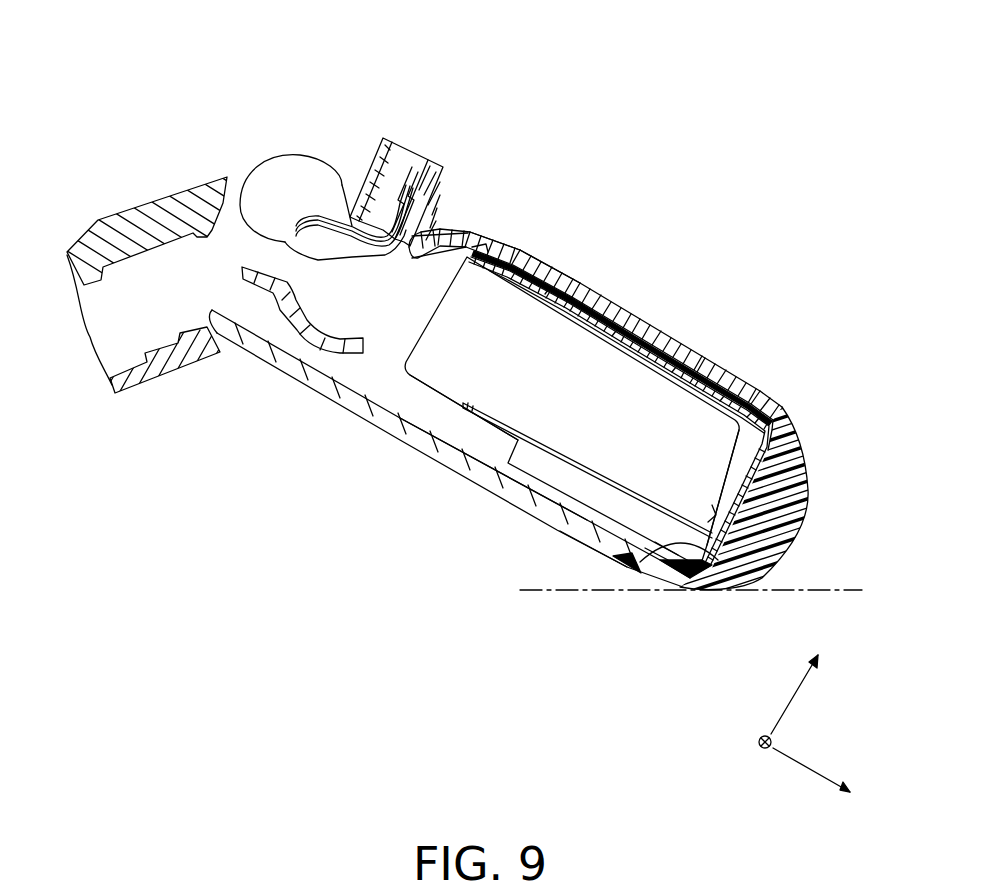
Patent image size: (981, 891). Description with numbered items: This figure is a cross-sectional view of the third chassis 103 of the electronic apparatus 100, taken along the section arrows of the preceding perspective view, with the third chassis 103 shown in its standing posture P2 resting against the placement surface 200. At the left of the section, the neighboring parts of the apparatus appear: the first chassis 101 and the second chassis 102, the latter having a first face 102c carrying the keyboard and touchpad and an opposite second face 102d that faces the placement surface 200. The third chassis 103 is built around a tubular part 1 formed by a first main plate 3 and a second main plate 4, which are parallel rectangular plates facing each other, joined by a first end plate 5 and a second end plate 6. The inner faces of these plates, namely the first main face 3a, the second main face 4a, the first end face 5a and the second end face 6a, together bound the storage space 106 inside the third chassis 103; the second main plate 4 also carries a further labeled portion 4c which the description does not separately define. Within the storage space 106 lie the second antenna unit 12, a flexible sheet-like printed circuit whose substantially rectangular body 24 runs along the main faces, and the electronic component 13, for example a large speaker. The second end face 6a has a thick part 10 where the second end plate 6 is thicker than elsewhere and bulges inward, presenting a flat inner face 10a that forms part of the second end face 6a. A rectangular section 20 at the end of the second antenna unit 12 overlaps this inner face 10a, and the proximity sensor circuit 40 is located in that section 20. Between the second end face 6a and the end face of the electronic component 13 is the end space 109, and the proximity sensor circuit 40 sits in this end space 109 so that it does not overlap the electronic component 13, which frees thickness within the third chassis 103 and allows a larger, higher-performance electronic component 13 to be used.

The electronic apparatus 100 is at (560, 132).
The first chassis 101 is at (403, 137).
The second chassis 102 is at (131, 203).
The first face 102c is at (168, 188).
The second face 102d is at (157, 378).
The third chassis 103 is at (712, 353).
The tubular part 1 is at (498, 236).
The standing posture P2 is at (538, 248).
The first main plate 3 is at (655, 340).
The first main face 3a is at (663, 370).
The first end plate 5 is at (430, 228).
The first end face 5a is at (416, 258).
The second end plate 6 is at (800, 494).
The second end face 6a is at (766, 450).
The second antenna unit 12 is at (630, 348).
The body 24 is at (513, 283).
The thick part 10 is at (733, 445).
The inner face 10a is at (723, 487).
The proximity sensor circuit 40 is at (720, 483).
The second main plate 4 is at (480, 477).
The second main face 4a is at (475, 448).
The contact point 4c is at (553, 566).
The electronic component 13 is at (433, 373).
The storage space 106 is at (447, 428).
The section 20 is at (617, 561).
The end space 109 is at (683, 550).
The placement surface 200 is at (780, 585).